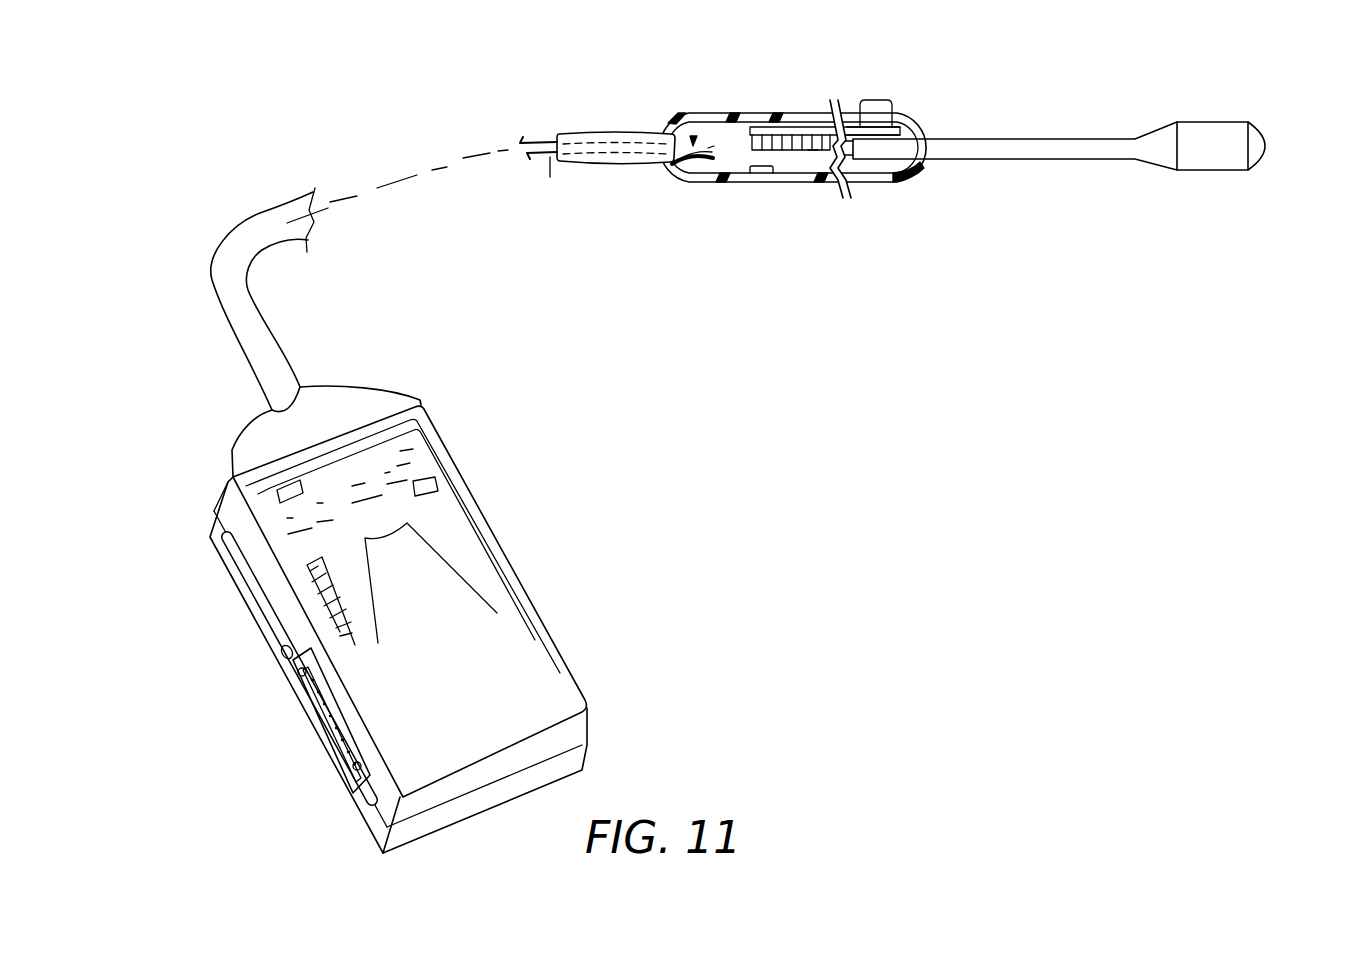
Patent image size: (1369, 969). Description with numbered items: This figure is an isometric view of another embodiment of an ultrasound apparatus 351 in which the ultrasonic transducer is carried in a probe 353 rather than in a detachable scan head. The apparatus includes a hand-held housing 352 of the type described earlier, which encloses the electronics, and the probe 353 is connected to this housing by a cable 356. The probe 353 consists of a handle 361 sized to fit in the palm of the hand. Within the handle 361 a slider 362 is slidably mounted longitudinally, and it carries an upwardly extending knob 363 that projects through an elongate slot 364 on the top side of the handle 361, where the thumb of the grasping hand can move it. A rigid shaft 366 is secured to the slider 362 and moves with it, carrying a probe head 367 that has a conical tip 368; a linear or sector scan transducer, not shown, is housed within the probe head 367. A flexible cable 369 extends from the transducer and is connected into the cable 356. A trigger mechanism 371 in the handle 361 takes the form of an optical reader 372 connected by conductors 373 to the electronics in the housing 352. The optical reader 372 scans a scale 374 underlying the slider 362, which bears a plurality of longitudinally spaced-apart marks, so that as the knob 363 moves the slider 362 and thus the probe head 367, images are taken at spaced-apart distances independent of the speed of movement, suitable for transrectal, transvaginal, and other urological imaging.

The ultrasound apparatus 351 is at (257, 205).
The hand-held housing 352 is at (417, 403).
The probe 353 is at (932, 160).
The cable 356 is at (611, 133).
The handle 361 is at (884, 183).
The slider 362 is at (852, 128).
The knob 363 is at (880, 105).
The elongate slot 364 is at (790, 118).
The rigid shaft 366 is at (1058, 152).
The probe head 367 is at (1218, 124).
The conical tip 368 is at (1265, 145).
The flexible cable 369 is at (522, 141).
The trigger mechanism 371 is at (690, 134).
The optical reader 372 is at (763, 173).
The conductors 373 is at (532, 157).
The scale 374 is at (813, 153).